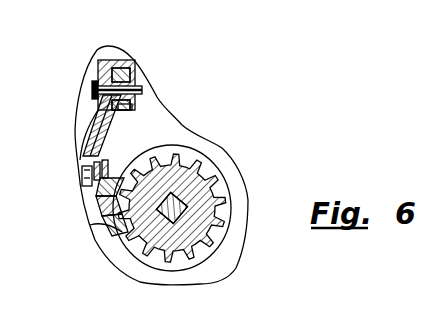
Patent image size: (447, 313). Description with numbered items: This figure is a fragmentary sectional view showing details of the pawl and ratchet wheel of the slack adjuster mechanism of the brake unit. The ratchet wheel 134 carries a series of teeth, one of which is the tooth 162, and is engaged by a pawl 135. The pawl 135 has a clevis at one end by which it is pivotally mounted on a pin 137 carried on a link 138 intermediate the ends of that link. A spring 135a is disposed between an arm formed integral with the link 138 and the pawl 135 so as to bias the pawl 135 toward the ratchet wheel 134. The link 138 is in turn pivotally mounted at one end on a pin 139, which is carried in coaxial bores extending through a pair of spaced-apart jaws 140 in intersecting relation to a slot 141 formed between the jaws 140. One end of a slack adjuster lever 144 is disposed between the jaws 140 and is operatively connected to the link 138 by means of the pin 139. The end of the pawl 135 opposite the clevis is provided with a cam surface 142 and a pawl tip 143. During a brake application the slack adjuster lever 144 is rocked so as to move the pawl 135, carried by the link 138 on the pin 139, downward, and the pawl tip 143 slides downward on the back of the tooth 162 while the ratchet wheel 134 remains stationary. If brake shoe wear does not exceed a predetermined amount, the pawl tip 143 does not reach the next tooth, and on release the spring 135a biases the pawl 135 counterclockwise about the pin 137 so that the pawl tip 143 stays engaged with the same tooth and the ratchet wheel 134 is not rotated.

The ratchet wheel 134 is at (203, 179).
The pawl 135 is at (102, 233).
The spring 135a is at (81, 177).
The pin 137 is at (110, 129).
The link 138 is at (100, 120).
The pin 139 is at (94, 92).
The jaws 140 is at (100, 66).
The slot 141 is at (122, 66).
The cam surface 142 is at (102, 201).
The pawl tip 143 is at (94, 186).
The slack adjuster lever 144 is at (132, 104).
The tooth 162 is at (102, 219).